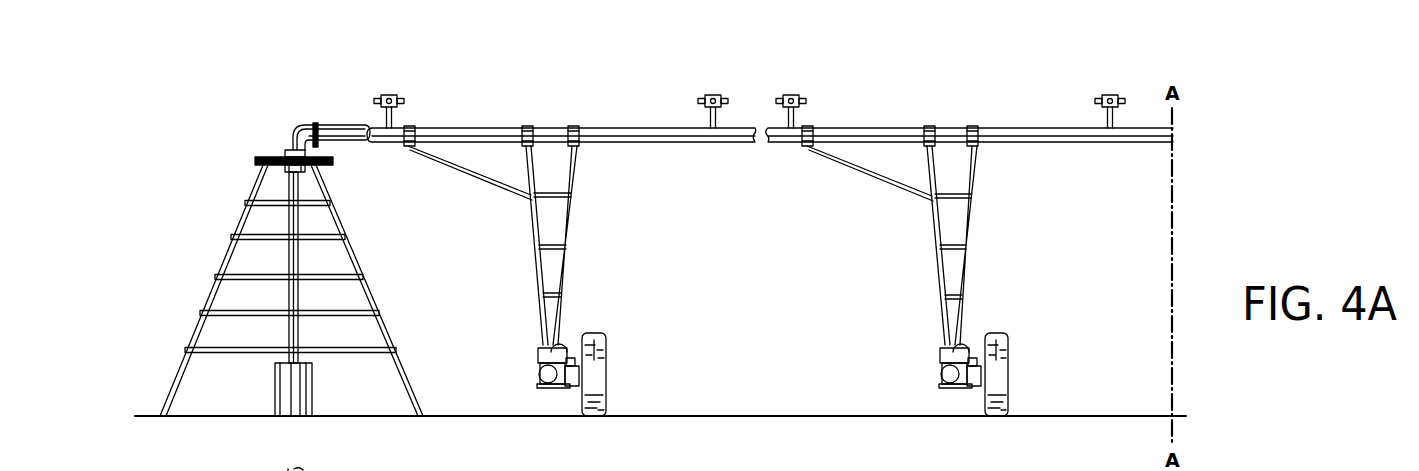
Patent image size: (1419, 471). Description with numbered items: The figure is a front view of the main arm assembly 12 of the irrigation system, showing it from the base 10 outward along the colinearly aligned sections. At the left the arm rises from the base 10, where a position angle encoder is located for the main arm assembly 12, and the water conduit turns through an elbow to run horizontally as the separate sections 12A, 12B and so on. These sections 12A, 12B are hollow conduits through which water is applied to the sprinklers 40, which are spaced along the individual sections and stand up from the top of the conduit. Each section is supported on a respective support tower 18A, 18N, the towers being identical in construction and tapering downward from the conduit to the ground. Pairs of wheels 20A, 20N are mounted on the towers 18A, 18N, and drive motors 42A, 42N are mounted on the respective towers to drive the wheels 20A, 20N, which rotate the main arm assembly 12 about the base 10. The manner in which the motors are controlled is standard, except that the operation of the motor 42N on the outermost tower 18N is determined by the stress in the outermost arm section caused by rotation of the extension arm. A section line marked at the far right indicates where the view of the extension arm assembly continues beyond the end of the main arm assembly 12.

The base 10 is at (358, 268).
The main arm assembly 12 is at (770, 129).
The main arm section 12A is at (437, 127).
The main arm section 12B is at (609, 127).
The support tower 18A is at (569, 243).
The support tower 18N is at (966, 250).
The wheels 20A is at (596, 371).
The wheels 20N is at (998, 373).
The sprinklers 40 is at (389, 95).
The drive motor 42A is at (556, 342).
The drive motor 42N is at (957, 343).